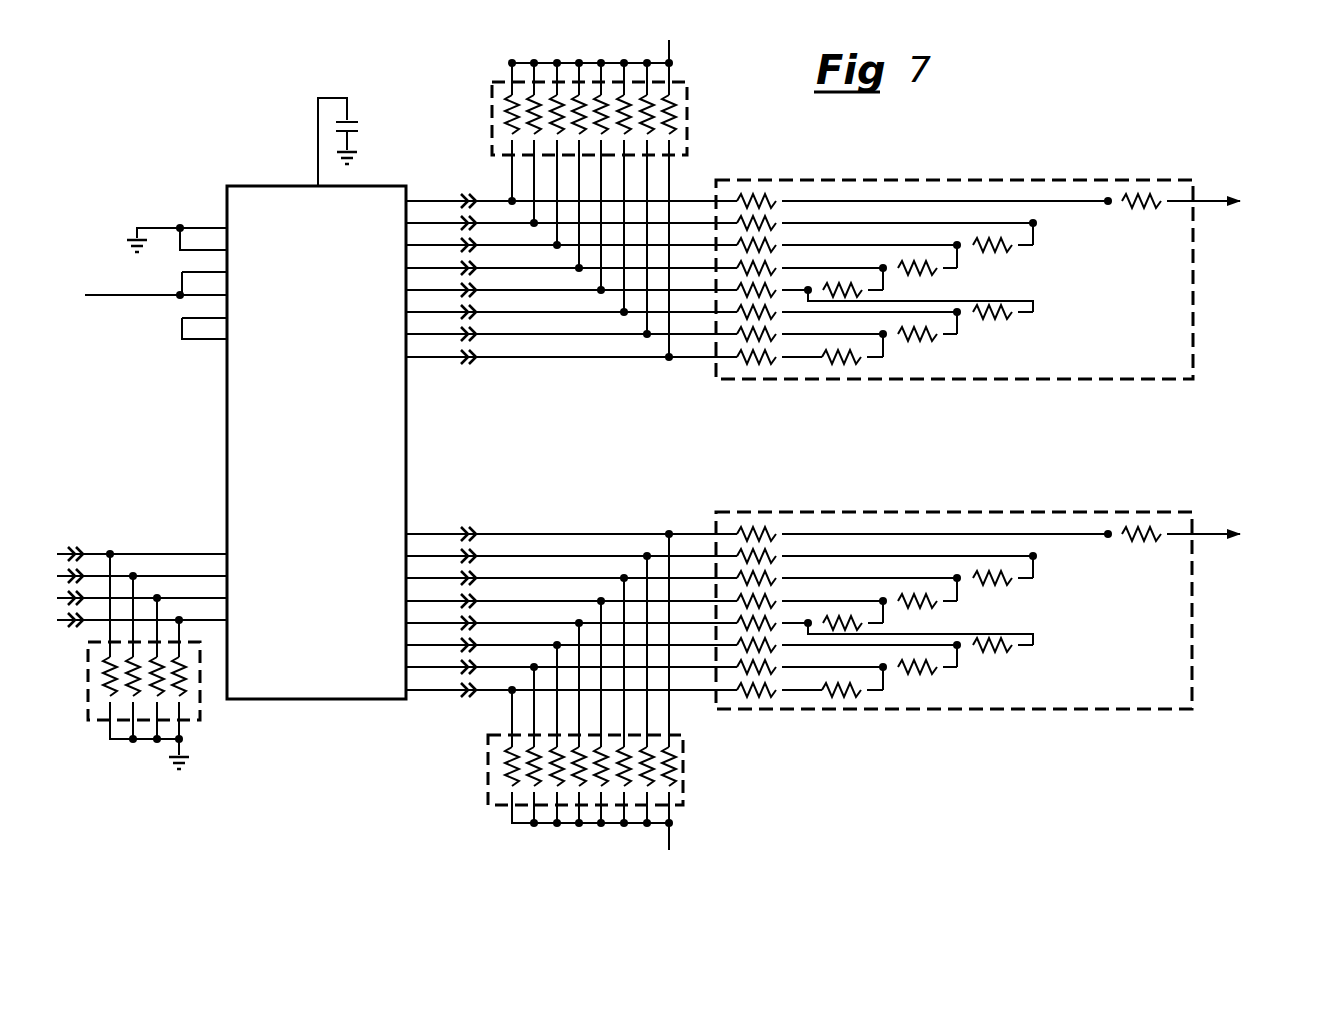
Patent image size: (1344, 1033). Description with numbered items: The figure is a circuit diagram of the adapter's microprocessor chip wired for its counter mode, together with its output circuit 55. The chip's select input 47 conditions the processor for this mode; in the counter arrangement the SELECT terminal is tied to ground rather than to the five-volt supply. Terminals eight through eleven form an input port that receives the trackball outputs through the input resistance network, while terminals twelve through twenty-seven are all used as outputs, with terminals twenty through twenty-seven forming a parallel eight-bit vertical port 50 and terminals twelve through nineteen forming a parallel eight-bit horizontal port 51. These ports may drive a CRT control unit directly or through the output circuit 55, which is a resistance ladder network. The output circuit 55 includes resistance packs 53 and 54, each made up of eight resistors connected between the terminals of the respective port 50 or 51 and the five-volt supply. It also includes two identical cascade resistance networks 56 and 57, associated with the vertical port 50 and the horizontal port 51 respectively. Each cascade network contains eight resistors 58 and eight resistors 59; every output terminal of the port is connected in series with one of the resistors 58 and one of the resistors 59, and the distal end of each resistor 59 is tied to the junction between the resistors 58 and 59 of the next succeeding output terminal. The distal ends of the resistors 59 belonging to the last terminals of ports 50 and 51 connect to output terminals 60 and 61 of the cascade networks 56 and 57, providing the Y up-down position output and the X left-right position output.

The select input 47 is at (190, 263).
The parallel 8-bit vertical port 50 is at (444, 196).
The parallel 8-bit horizontal port 51 is at (443, 531).
The resistance pack 53 is at (688, 88).
The resistance pack 54 is at (685, 752).
The output circuit 55 is at (1016, 172).
The cascade resistance network 56 is at (1195, 293).
The cascade resistance network 57 is at (1192, 627).
The resistors 58 is at (780, 223).
The resistors 59 is at (948, 337).
The output terminal 60 is at (1236, 200).
The output terminal 61 is at (1235, 532).